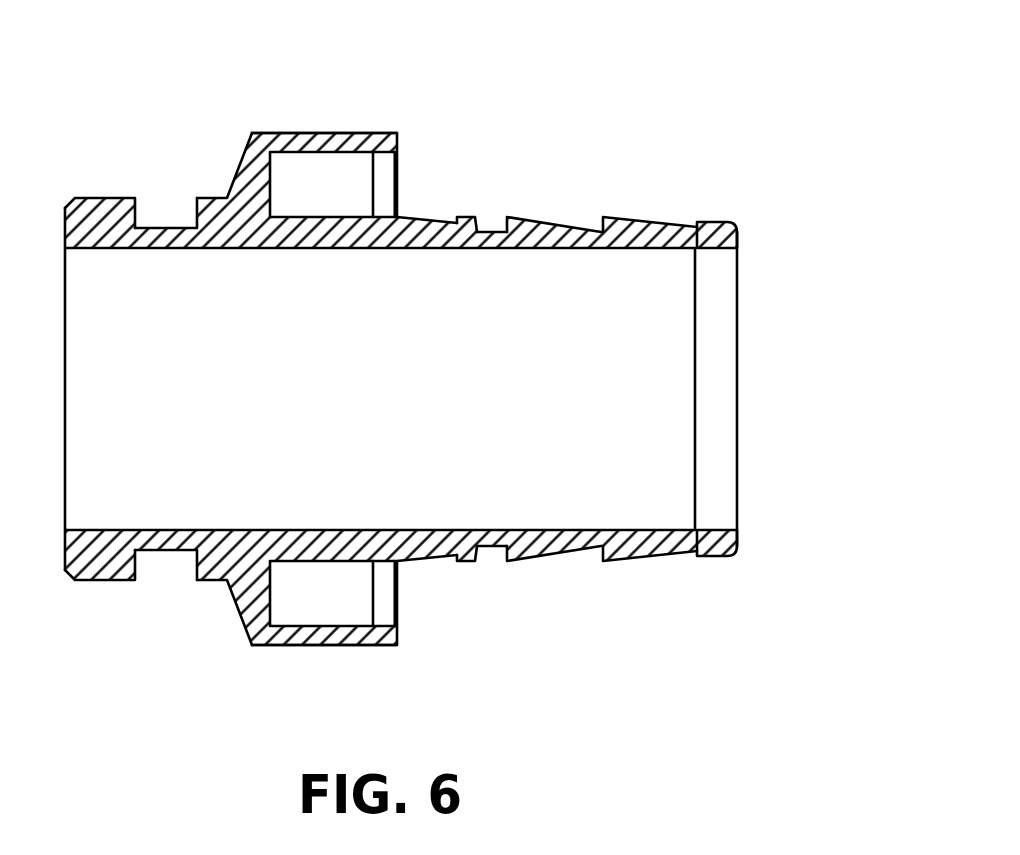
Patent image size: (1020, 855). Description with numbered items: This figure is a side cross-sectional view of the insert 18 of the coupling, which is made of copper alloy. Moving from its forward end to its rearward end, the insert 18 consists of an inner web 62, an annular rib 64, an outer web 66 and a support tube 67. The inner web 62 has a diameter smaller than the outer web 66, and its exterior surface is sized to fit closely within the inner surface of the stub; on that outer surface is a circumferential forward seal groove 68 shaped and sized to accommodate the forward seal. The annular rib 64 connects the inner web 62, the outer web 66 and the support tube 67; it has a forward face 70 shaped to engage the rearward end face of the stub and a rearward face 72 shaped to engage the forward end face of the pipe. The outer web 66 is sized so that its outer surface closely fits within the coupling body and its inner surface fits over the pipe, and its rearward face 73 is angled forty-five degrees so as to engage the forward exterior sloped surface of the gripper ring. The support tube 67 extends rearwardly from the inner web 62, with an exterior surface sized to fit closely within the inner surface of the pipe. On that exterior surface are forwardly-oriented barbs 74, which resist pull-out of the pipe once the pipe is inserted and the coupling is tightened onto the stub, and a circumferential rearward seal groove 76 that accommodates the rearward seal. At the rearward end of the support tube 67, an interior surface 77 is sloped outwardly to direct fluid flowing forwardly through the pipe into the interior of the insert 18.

The insert 18 is at (788, 95).
The inner web 62 is at (102, 217).
The annular rib 64 is at (257, 180).
The outer web 66 is at (345, 140).
The support tube 67 is at (443, 225).
The forward seal groove 68 is at (165, 211).
The forward face 70 is at (240, 167).
The rearward face 72 is at (272, 187).
The rearward face of the outer web 73 is at (385, 147).
The barbs 74 is at (642, 223).
The rearward seal groove 76 is at (492, 211).
The interior surface 77 is at (713, 247).